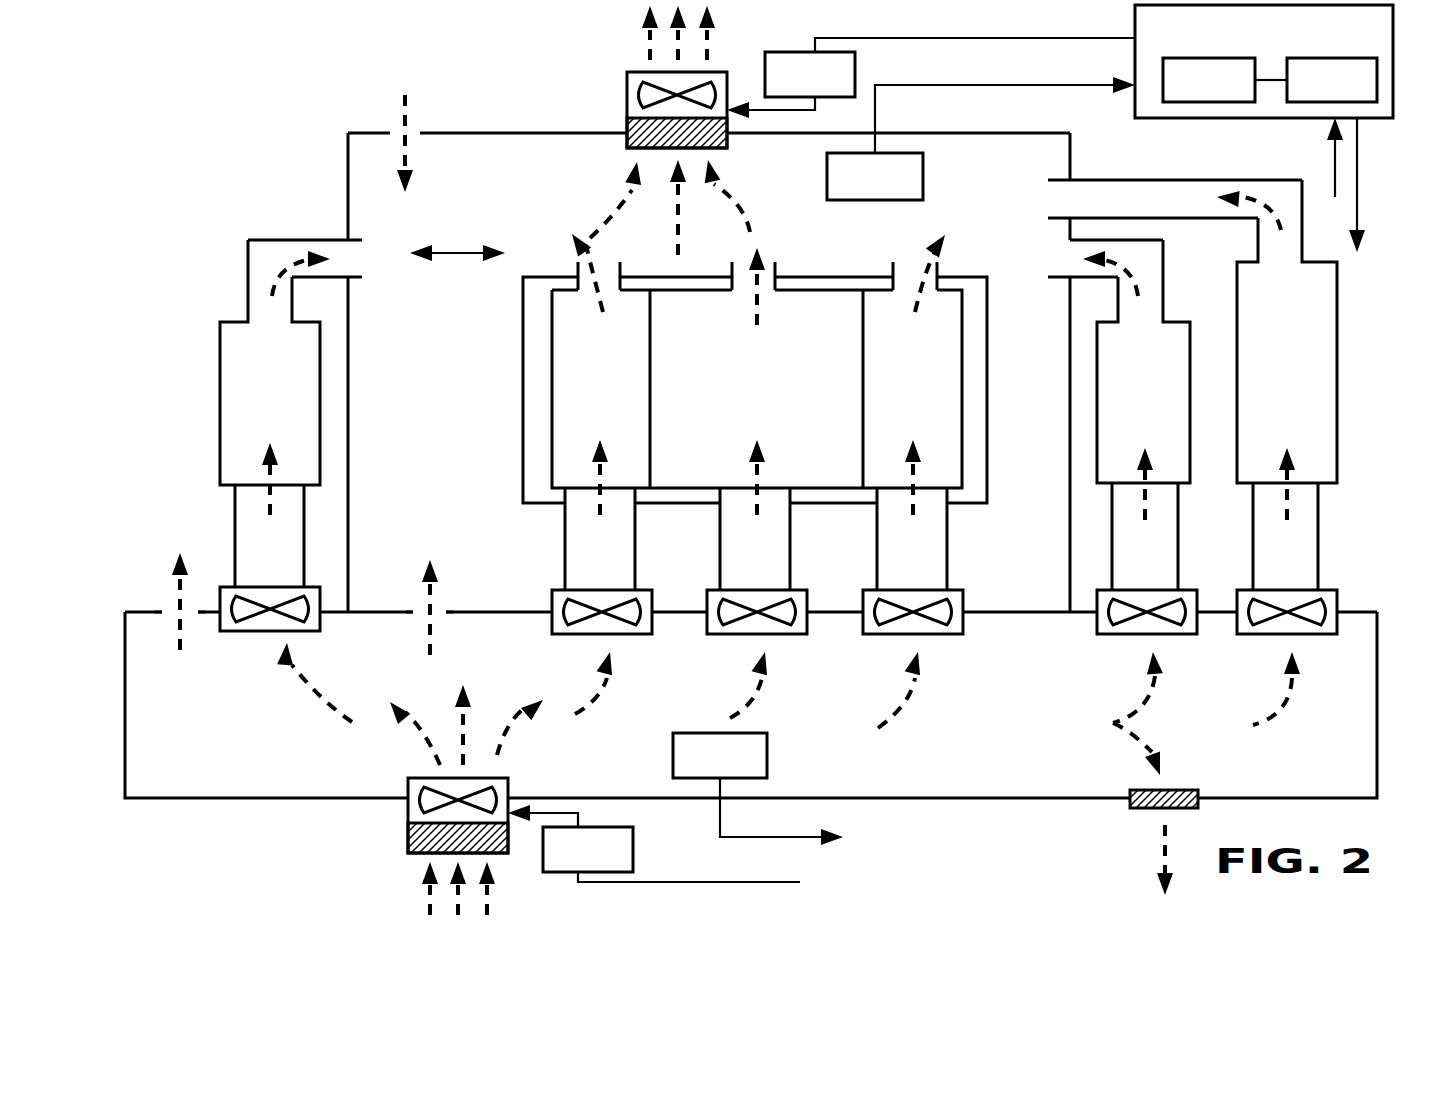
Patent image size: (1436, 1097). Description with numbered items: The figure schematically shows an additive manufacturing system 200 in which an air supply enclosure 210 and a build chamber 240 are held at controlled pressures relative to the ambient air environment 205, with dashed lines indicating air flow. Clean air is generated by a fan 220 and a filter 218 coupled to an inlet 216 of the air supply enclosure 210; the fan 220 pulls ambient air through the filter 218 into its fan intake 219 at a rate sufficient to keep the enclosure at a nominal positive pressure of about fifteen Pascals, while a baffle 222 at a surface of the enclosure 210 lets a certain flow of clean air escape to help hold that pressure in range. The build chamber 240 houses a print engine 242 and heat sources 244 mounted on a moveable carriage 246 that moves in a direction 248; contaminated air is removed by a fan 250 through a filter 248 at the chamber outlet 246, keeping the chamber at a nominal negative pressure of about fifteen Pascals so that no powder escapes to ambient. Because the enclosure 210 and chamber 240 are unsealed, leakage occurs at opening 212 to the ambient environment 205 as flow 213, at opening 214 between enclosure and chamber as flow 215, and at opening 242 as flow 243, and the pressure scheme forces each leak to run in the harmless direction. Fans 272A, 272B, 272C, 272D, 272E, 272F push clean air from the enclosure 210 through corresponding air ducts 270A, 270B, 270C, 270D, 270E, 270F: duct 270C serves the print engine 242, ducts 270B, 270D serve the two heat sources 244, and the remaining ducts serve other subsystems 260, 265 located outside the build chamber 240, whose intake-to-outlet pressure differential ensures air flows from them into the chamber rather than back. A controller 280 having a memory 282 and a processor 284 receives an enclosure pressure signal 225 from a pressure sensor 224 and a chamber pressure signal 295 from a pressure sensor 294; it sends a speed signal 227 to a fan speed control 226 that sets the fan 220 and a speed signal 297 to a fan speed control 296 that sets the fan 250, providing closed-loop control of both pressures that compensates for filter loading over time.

The additive manufacturing system 200 is at (206, 84).
The ambient air environment 205 is at (145, 398).
The air supply enclosure 210 is at (368, 775).
The opening 212 is at (157, 594).
The leakage flow 213 is at (180, 645).
The opening 214 is at (448, 590).
The leakage flow 215 is at (428, 605).
The inlet 216 is at (526, 758).
The filter 218 is at (510, 838).
The fan intake 219 is at (386, 852).
The fan 220 is at (408, 810).
The baffle 222 is at (1182, 790).
The pressure sensor 224 is at (743, 772).
The signal 225 is at (720, 825).
The fan speed control 226 is at (611, 867).
The signal 227 is at (625, 882).
The build chamber 240 is at (455, 532).
The print engine 242 is at (780, 407).
The leakage flow 243 is at (408, 125).
The heat source 244 is at (623, 407).
The moveable carriage 246 is at (758, 192).
The filter 248 is at (627, 125).
The fan 250 is at (627, 85).
The subsystem 260 is at (293, 417).
The auxiliary compartment 265 is at (1310, 388).
The air duct 270A is at (293, 548).
The air duct 270B is at (623, 553).
The air duct 270C is at (780, 553).
The air duct 270D is at (936, 553).
The air duct 270E is at (1168, 553).
The air duct 270F is at (1310, 553).
The fan 272A is at (312, 633).
The fan 272B is at (565, 635).
The fan 272C is at (740, 636).
The fan 272D is at (895, 636).
The fan 272E is at (1120, 637).
The fan 272F is at (1268, 637).
The controller 280 is at (1383, 43).
The memory 282 is at (1232, 97).
The processor 284 is at (1355, 97).
The pressure sensor 294 is at (898, 195).
The signal 295 is at (925, 85).
The fan speed control 296 is at (833, 91).
The signal 297 is at (875, 38).